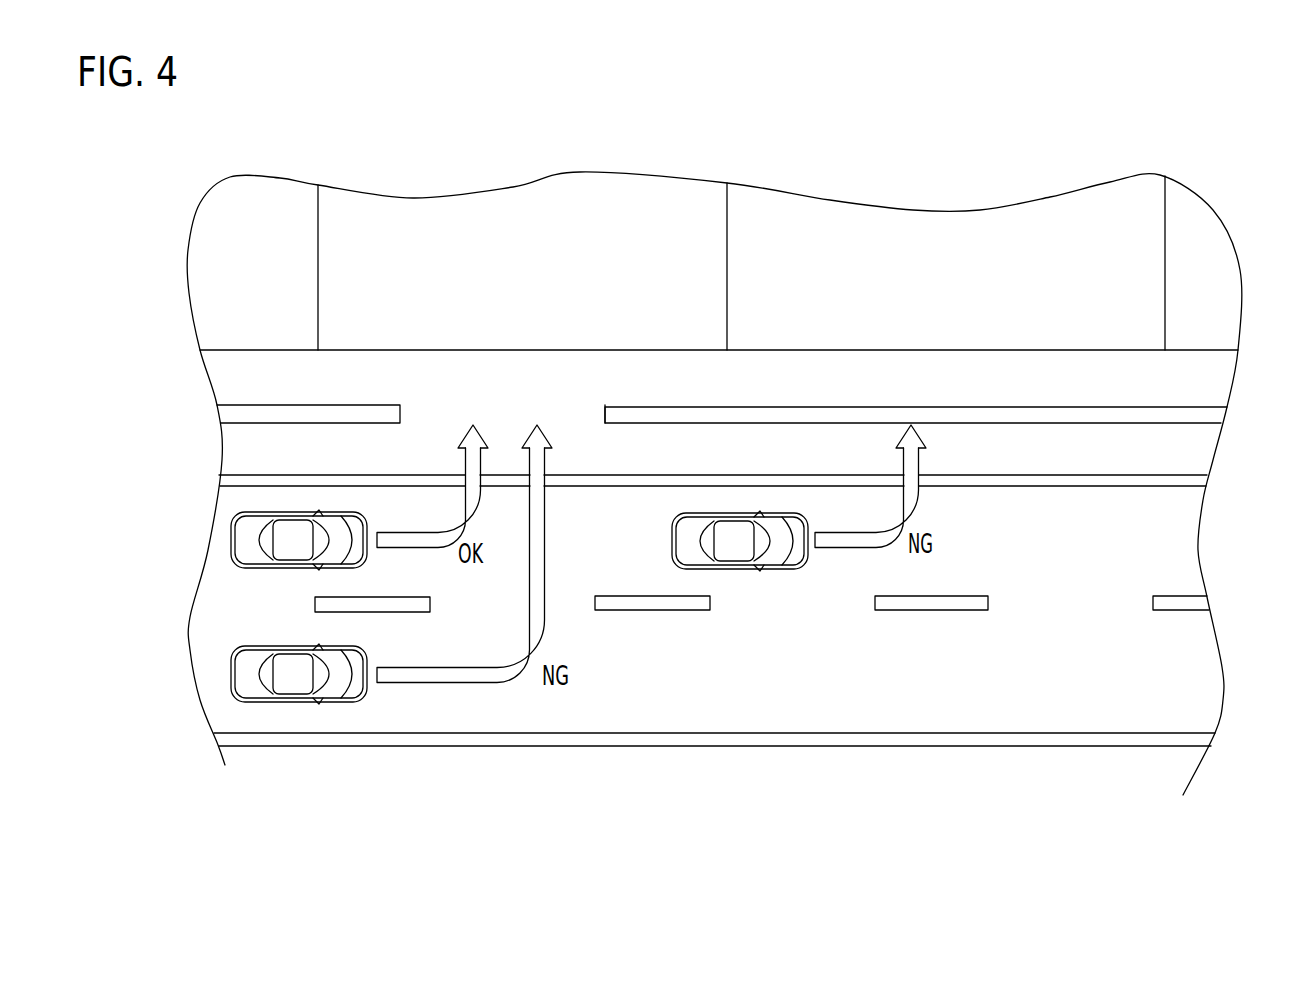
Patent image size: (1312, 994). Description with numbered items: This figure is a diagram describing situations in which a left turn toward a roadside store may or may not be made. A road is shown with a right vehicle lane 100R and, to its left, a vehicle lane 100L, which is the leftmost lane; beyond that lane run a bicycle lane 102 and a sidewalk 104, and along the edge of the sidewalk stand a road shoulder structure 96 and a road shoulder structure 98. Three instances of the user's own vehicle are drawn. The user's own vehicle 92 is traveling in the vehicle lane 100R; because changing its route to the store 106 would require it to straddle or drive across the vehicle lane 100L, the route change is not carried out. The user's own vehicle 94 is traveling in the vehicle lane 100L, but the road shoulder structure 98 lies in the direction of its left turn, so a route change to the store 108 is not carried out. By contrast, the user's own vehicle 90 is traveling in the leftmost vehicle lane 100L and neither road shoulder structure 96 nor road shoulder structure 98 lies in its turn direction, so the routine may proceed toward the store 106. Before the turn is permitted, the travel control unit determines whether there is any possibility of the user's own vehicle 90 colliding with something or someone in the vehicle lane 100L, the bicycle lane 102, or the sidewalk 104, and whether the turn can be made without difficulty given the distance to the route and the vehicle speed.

The user's own vehicle 90 is at (240, 538).
The user's own vehicle 92 is at (240, 672).
The user's own vehicle 94 is at (682, 540).
The road shoulder structure 96 is at (340, 403).
The road shoulder structure 98 is at (623, 402).
The vehicle lane 100L is at (1182, 551).
The vehicle lane 100R is at (1190, 673).
The bicycle lane 102 is at (1200, 452).
The sidewalk 104 is at (1218, 386).
The store 106 is at (560, 333).
The store 108 is at (855, 335).